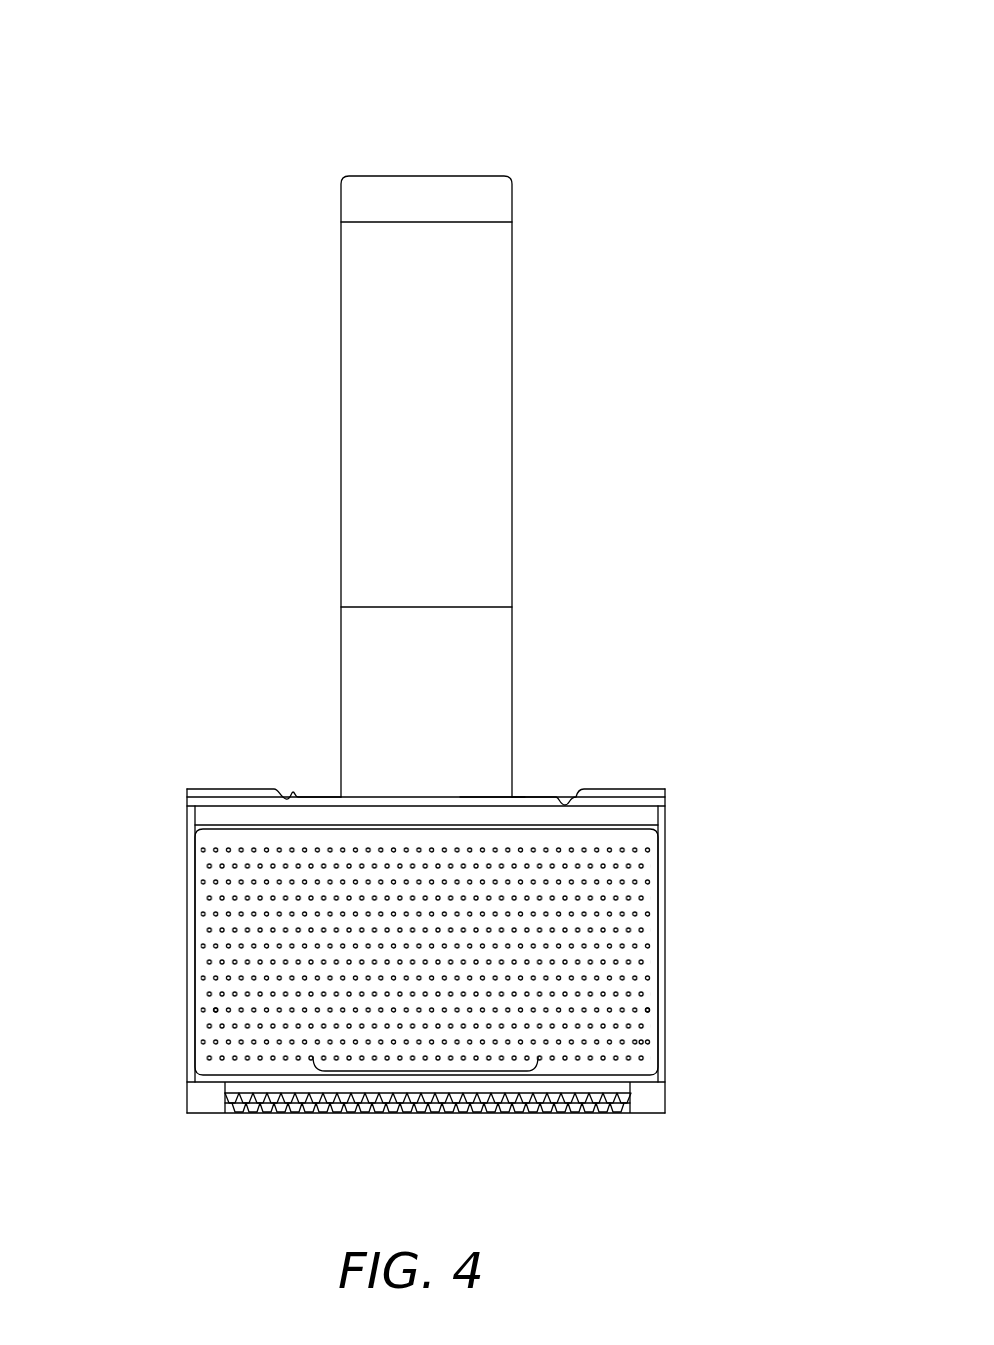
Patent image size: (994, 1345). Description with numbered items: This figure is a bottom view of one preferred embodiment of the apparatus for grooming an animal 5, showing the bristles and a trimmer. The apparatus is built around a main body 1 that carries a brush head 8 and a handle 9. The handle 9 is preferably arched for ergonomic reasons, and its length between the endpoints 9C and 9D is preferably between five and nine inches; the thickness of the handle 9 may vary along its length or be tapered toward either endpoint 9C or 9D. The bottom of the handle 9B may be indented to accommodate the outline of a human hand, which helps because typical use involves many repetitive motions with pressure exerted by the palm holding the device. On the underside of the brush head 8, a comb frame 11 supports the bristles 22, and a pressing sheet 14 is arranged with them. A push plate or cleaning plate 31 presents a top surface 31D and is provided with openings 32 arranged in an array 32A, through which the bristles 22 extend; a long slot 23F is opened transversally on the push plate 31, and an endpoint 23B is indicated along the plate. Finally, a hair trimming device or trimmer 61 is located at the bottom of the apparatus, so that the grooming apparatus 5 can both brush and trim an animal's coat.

The apparatus for grooming an animal 5 is at (356, 31).
The main body 1 is at (184, 208).
The brush head 8 is at (702, 938).
The handle 9 is at (553, 428).
The bottom of the handle 9B is at (378, 468).
The endpoint of the handle 9C is at (493, 203).
The endpoint of the handle 9D is at (470, 797).
The comb frame 11 is at (187, 883).
The pressing sheet 14 is at (598, 817).
The bristles 22 is at (218, 1008).
The endpoint 23B is at (650, 1008).
The long slot 23F is at (200, 1094).
The push plate 31 is at (645, 900).
The top surface 31D is at (658, 852).
The openings 32 is at (206, 832).
The array 32A is at (425, 1071).
The hair trimming device 61 is at (267, 1112).